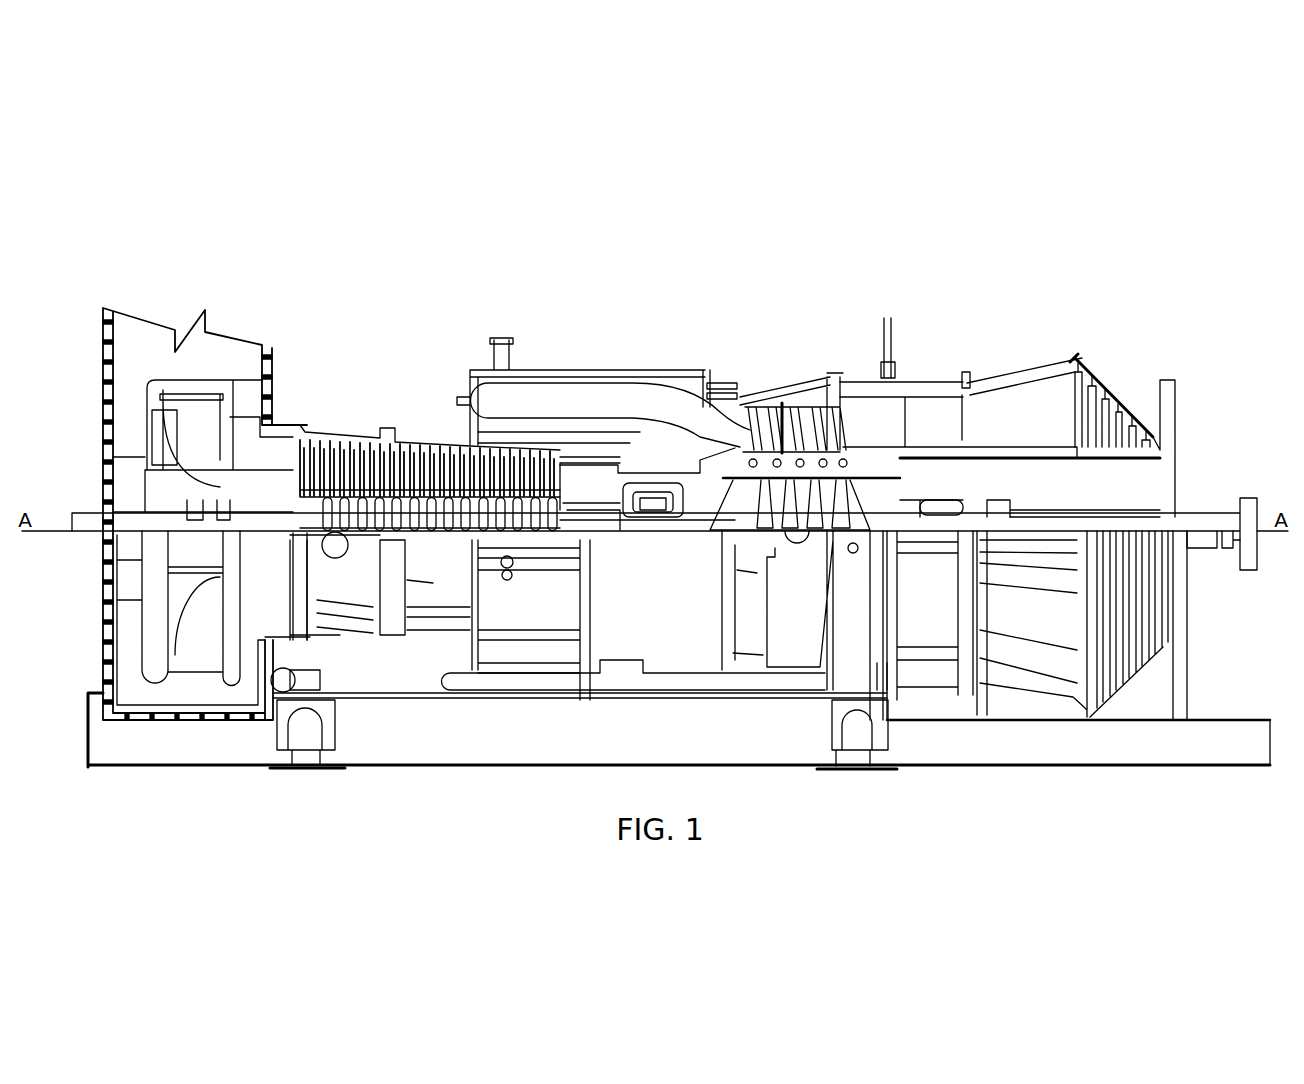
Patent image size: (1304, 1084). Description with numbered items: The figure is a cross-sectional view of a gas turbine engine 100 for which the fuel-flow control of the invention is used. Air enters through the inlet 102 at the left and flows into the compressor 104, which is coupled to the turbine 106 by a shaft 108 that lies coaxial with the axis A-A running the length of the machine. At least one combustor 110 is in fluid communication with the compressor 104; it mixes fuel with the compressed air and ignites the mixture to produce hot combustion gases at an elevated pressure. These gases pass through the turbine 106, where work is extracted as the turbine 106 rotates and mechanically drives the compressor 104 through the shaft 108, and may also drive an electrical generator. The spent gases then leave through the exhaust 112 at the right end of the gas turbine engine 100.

The gas turbine engine 100 is at (882, 258).
The inlet 102 is at (183, 318).
The compressor 104 is at (372, 410).
The turbine 106 is at (782, 383).
The shaft 108 is at (1210, 518).
The combustor 110 is at (583, 345).
The exhaust 112 is at (1107, 363).